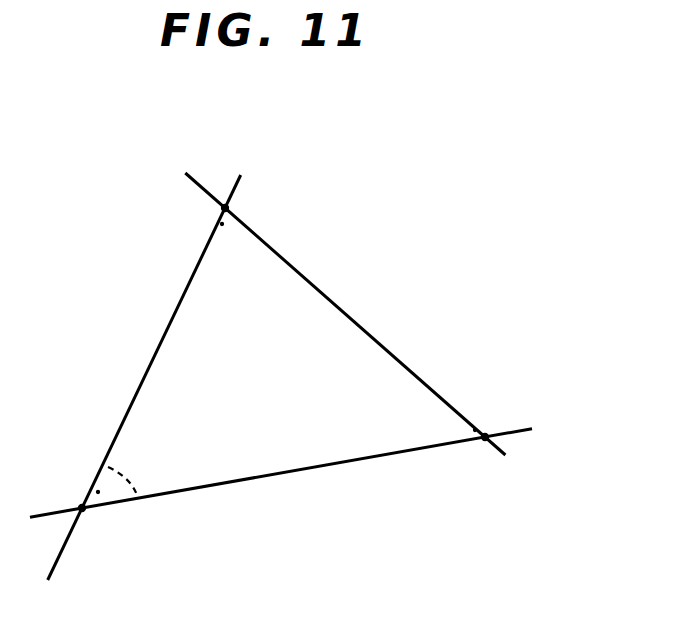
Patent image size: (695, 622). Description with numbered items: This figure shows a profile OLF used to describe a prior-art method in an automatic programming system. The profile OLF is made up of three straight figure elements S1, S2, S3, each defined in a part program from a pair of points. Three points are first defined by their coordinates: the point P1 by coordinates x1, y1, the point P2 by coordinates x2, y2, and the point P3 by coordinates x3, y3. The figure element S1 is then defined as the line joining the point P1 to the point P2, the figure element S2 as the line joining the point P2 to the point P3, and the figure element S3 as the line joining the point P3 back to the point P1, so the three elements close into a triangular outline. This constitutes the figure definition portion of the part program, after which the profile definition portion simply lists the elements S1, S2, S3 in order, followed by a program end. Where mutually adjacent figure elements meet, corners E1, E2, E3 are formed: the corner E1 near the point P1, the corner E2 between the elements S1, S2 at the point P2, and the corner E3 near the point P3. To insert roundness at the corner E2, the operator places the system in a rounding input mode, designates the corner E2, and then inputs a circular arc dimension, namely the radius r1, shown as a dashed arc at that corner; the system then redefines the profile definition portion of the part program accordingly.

The profile OLF is at (316, 267).
The figure element S1 is at (148, 365).
The figure element S2 is at (300, 473).
The figure element S3 is at (378, 338).
The point P1 is at (226, 205).
The point P2 is at (84, 511).
The point P3 is at (483, 440).
The corner E1 is at (222, 224).
The corner E2 is at (98, 492).
The corner E3 is at (476, 430).
The radius r1 is at (145, 458).